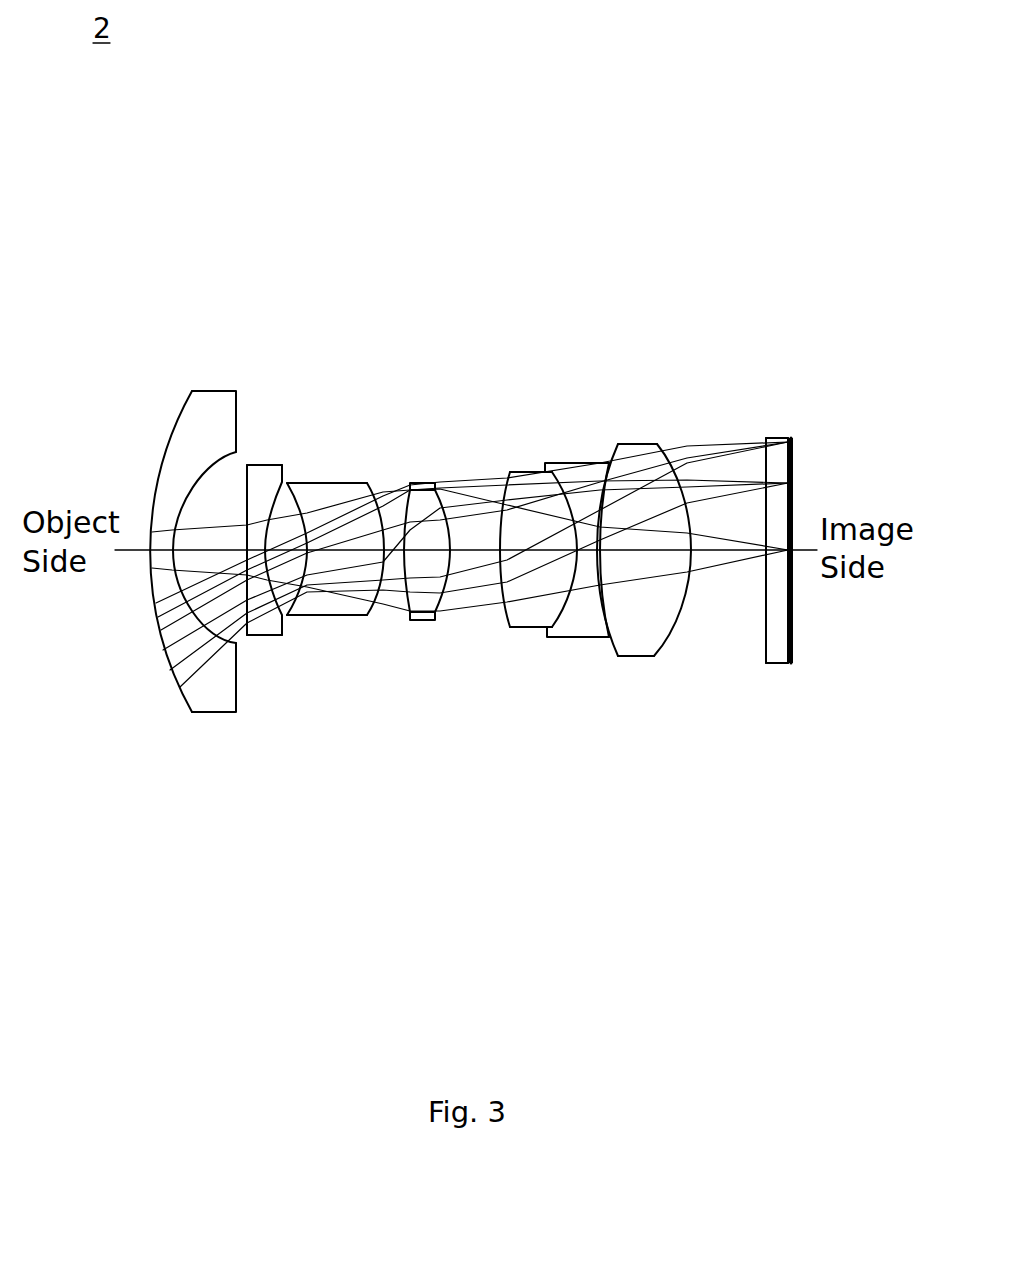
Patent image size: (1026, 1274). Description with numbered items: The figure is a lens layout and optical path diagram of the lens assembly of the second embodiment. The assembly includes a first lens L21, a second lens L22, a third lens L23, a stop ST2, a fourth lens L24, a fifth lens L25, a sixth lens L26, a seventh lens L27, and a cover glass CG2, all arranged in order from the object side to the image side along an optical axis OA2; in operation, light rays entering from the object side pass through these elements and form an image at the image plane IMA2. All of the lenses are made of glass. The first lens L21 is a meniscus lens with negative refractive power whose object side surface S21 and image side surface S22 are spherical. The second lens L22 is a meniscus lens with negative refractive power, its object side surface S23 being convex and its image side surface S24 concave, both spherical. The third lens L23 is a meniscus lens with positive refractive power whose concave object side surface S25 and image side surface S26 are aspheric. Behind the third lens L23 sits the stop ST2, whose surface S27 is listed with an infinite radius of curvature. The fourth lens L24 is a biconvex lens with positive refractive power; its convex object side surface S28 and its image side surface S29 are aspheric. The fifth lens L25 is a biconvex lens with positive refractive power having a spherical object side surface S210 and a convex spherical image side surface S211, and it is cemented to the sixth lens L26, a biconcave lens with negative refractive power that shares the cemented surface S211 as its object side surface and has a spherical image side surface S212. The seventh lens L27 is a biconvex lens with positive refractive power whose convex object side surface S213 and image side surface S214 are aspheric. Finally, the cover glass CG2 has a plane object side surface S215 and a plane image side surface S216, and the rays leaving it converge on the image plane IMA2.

The first lens L21 is at (159, 496).
The second lens L22 is at (254, 530).
The third lens L23 is at (345, 572).
The stop ST2 is at (405, 483).
The fourth lens L24 is at (459, 553).
The fifth lens L25 is at (541, 537).
The sixth lens L26 is at (627, 553).
The seventh lens L27 is at (715, 566).
The cover glass CG2 is at (788, 543).
The image plane IMA2 is at (833, 495).
The optical axis OA2 is at (140, 551).
The object side surface of the first lens S21 is at (167, 653).
The image side surface of the first lens S22 is at (224, 635).
The object side surface of the second lens S23 is at (246, 636).
The image side surface of the second lens S24 is at (280, 635).
The object side surface of the third lens S25 is at (303, 615).
The image side surface of the third lens S26 is at (383, 617).
The stop surface S27 is at (405, 620).
The object side surface of the fourth lens S28 is at (427, 620).
The image side surface of the fourth lens S29 is at (453, 603).
The object side surface of the fifth lens S210 is at (505, 628).
The image side surface of the fifth lens S211 is at (605, 640).
The image side surface of the sixth lens S212 is at (612, 613).
The object side surface of the seventh lens S213 is at (683, 620).
The image side surface of the seventh lens S214 is at (766, 630).
The object side surface of the cover glass S215 is at (787, 663).
The image side surface of the cover glass S216 is at (793, 665).